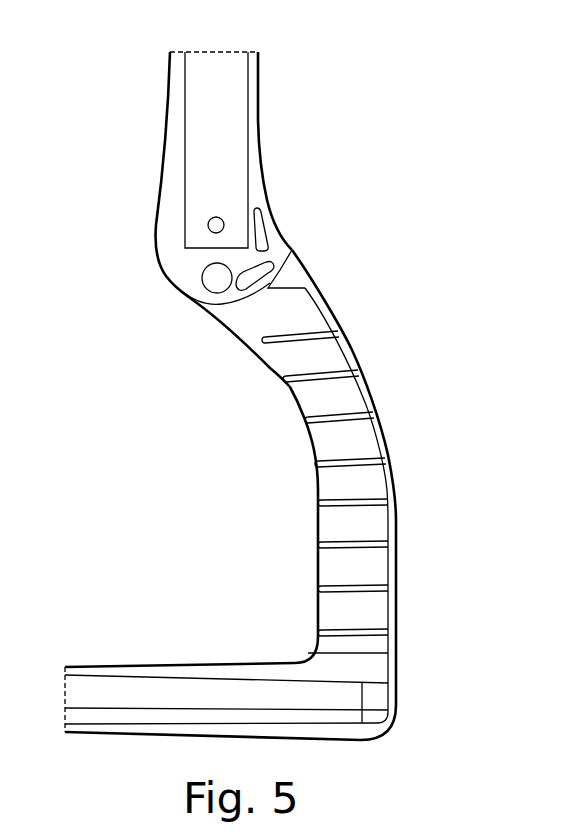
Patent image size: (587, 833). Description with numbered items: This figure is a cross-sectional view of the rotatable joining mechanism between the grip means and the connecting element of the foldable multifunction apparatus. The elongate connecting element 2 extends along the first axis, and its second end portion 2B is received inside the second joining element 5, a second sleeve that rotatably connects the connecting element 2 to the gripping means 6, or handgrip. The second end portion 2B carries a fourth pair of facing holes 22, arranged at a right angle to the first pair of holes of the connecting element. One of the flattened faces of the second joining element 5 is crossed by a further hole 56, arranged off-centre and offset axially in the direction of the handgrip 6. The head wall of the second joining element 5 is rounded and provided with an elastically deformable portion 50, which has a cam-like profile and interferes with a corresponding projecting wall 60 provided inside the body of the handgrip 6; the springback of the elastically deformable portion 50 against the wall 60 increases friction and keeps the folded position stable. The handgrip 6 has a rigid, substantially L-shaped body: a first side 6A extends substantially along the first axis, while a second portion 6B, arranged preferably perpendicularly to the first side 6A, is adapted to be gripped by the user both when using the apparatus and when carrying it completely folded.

The elongate connecting element 2 is at (222, 103).
The second end portion 2B is at (233, 232).
The fourth pair of facing holes 22 is at (216, 217).
The second joining element 5 is at (170, 256).
The elastically deformable portion 50 is at (250, 290).
The further hole 56 is at (202, 282).
The projecting wall 60 is at (286, 280).
The gripping means 6 is at (398, 512).
The first side 6A is at (385, 440).
The second portion 6B is at (142, 671).